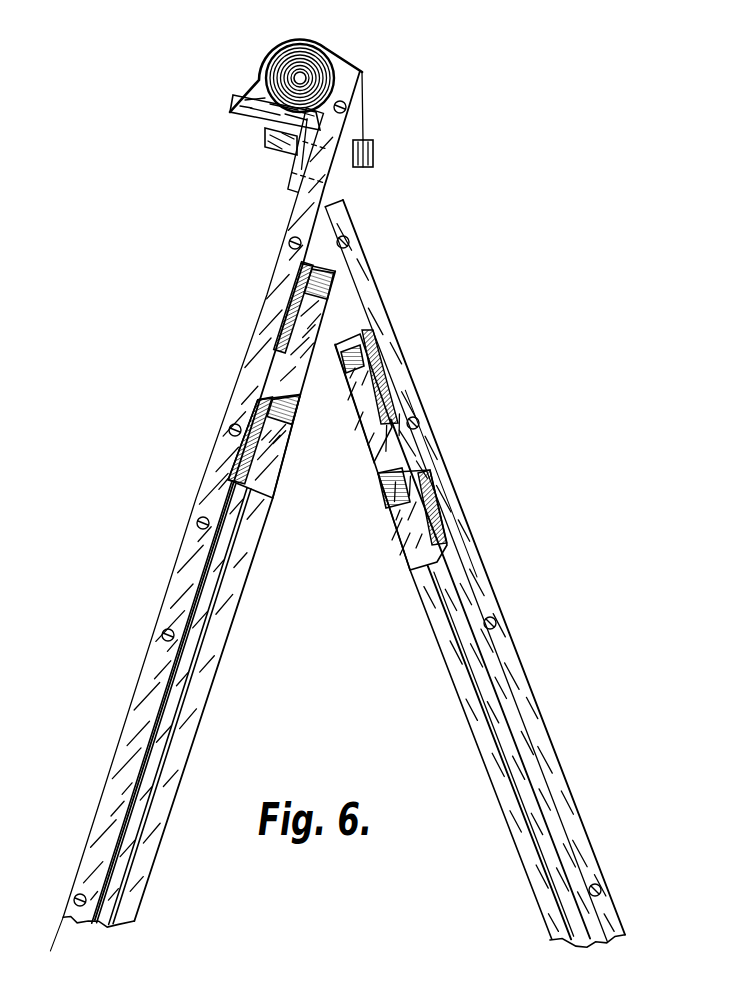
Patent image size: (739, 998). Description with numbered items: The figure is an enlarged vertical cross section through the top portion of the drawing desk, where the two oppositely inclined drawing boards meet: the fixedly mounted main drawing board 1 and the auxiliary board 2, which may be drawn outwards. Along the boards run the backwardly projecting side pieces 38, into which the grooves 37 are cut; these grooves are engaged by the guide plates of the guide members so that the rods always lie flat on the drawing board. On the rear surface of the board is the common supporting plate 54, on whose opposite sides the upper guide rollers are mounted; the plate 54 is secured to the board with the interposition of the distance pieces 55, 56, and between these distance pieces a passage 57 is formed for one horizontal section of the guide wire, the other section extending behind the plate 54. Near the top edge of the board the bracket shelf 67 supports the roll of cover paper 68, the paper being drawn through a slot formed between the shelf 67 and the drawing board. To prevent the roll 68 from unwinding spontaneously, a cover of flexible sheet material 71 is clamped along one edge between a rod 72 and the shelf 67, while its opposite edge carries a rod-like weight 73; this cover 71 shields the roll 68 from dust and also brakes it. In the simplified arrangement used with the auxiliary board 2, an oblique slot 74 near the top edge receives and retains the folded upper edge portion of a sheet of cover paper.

The main drawing board 1 is at (137, 735).
The auxiliary board 2 is at (525, 722).
The grooves 37 is at (168, 705).
The backwardly projecting side pieces 38 is at (172, 673).
The supporting plate 54 is at (268, 428).
The distance piece 55 is at (382, 393).
The distance piece 56 is at (437, 540).
The passage 57 is at (403, 450).
The bracket shelf 67 is at (230, 111).
The roll of cover paper 68 is at (278, 68).
The cover of flexible sheet material 71 is at (247, 78).
The rod 72 is at (267, 145).
The rod-like weight 73 is at (376, 157).
The oblique slot 74 is at (437, 457).